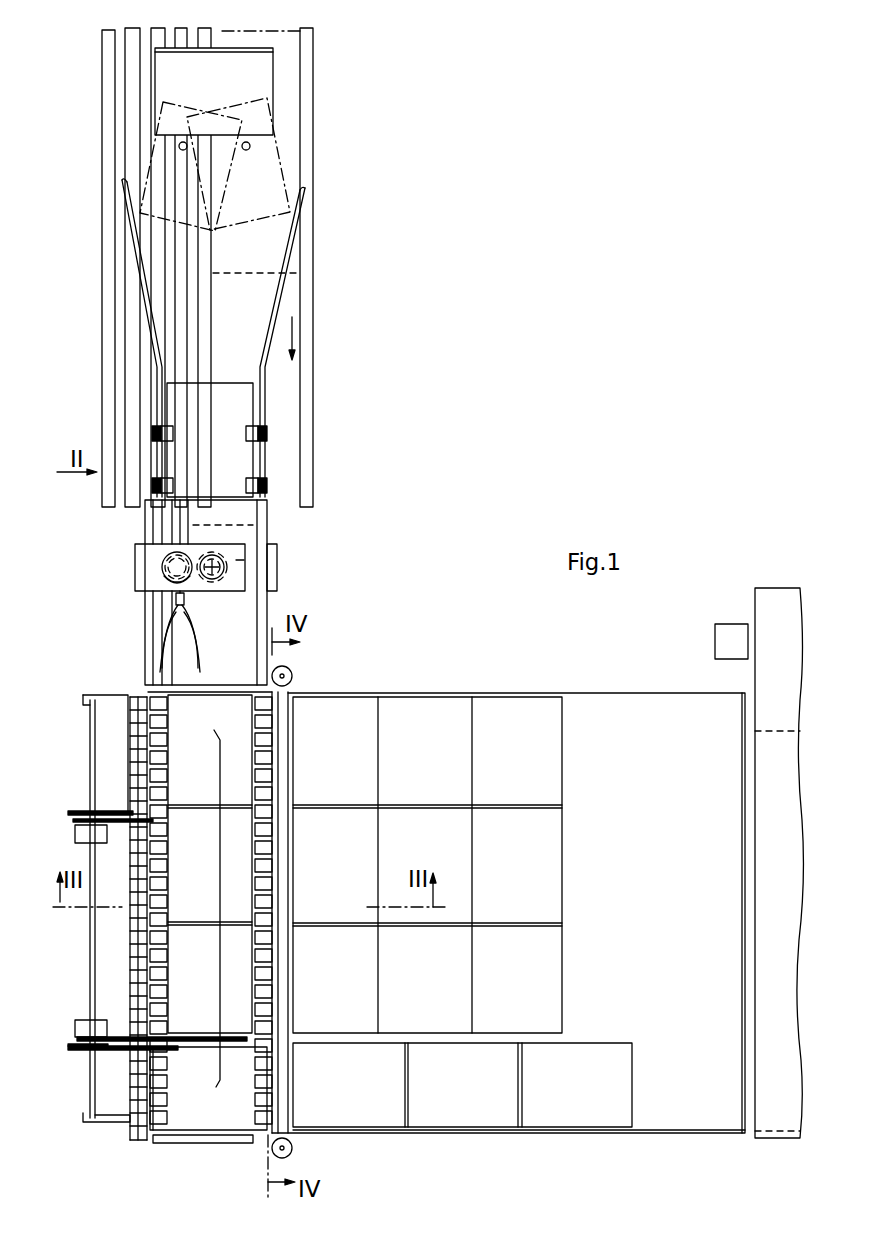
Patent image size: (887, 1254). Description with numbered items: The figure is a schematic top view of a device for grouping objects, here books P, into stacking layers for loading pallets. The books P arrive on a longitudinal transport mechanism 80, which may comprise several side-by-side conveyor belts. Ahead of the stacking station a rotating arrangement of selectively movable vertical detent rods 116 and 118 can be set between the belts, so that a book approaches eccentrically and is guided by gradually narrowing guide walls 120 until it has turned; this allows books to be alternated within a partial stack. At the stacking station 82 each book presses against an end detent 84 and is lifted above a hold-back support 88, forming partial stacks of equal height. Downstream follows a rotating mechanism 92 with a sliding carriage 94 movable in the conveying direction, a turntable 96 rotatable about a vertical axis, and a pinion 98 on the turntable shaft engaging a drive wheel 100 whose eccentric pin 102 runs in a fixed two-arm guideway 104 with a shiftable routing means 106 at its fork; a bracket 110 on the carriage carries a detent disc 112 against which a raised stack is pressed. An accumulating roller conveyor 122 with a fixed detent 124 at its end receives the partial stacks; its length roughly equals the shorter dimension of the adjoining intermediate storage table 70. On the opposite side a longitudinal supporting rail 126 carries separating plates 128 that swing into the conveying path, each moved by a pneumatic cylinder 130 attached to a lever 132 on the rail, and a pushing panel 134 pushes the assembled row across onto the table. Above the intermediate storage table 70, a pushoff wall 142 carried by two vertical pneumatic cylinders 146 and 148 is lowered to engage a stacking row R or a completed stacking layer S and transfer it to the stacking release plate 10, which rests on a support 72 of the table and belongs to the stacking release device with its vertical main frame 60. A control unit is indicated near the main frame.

The stacking release plate 10 is at (774, 596).
The vertical main frame 60 is at (730, 624).
The intermediate storage table 70 is at (508, 909).
The support 72 is at (751, 1125).
The longitudinal transport mechanism 80 is at (303, 117).
The sheet bundle / stack B is at (265, 63).
The stacking station 82 is at (257, 433).
The end detent 84 is at (240, 503).
The hold-back support 88 is at (268, 433).
The rotating mechanism 92 is at (284, 565).
The sliding carriage 94 is at (278, 585).
The turntable 96 is at (211, 553).
The pinion 98 is at (212, 580).
The drive wheel 100 is at (162, 558).
The eccentric pin 102 is at (172, 582).
The two-arm guideway 104 is at (160, 652).
The shiftable routing means 106 is at (176, 600).
The bracket 110 is at (238, 582).
The detent disc 112 is at (177, 567).
The vertical detent rod 116 is at (179, 145).
The vertical detent rod 118 is at (250, 146).
The guide walls 120 is at (308, 190).
The accumulating roller conveyor 122 is at (150, 928).
The fixed detent 124 is at (200, 1144).
The longitudinal supporting rail 126 is at (90, 752).
The separating plates 128 is at (122, 824).
The pneumatic cylinder 130 is at (113, 1051).
The lever 132 is at (76, 1053).
The pushing panel 134 is at (138, 1133).
The pushoff wall 142 is at (282, 757).
The pneumatic cylinder 146 is at (292, 676).
The pneumatic cylinder 148 is at (292, 1151).
The books P is at (209, 414).
The stacking row R is at (221, 893).
The stacking layer S is at (728, 1140).